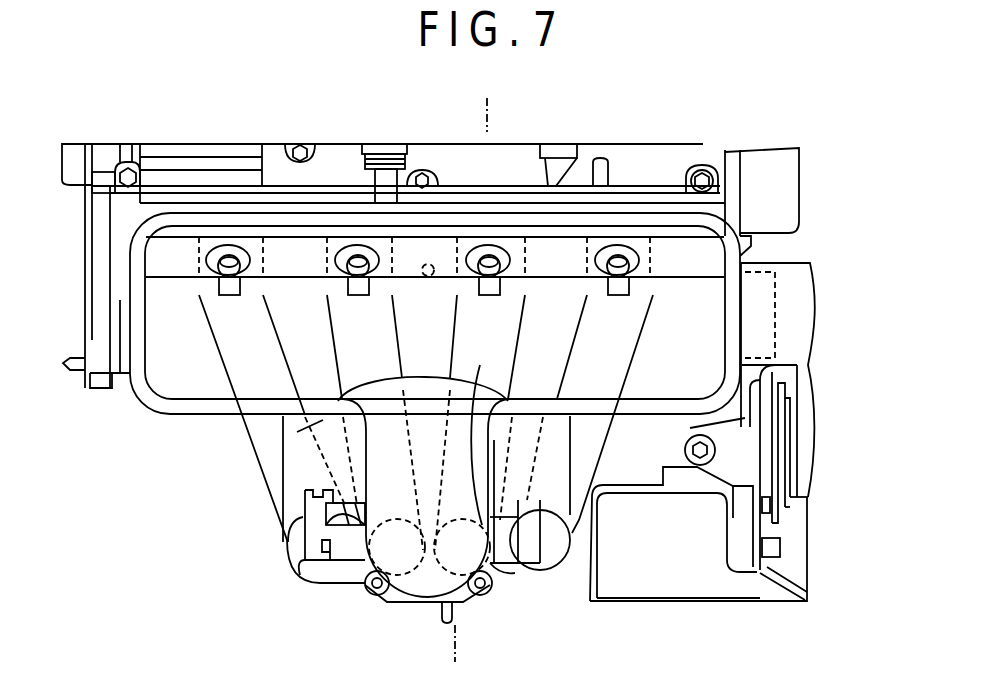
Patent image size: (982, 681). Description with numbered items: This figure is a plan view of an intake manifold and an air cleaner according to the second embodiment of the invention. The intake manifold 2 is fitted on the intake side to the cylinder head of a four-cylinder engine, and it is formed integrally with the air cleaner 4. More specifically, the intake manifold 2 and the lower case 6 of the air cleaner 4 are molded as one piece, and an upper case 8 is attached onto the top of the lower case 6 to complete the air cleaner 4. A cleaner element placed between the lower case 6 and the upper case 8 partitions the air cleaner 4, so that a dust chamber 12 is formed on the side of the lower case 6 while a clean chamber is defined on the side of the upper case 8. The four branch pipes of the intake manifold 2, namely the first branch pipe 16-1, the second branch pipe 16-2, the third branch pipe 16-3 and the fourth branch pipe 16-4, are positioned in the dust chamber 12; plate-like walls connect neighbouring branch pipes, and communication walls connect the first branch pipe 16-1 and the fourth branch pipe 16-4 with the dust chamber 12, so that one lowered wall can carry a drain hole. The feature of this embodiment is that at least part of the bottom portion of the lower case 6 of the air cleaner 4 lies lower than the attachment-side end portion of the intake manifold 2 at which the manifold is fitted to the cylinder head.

The intake manifold 2 is at (225, 368).
The air cleaner 4 is at (225, 413).
The lower case 6 is at (137, 322).
The upper case 8 is at (445, 98).
The dust chamber 12 is at (707, 300).
The first branch pipe 16-1 is at (623, 345).
The second branch pipe 16-2 is at (513, 570).
The third branch pipe 16-3 is at (347, 373).
The fourth branch pipe 16-4 is at (273, 378).